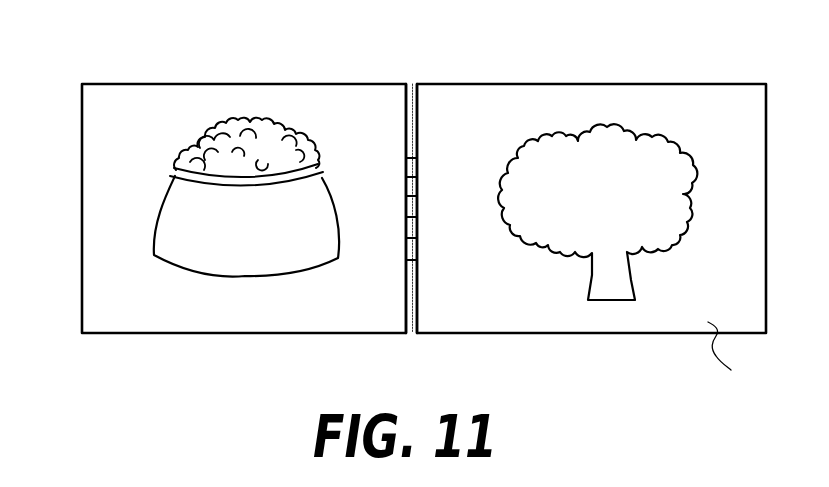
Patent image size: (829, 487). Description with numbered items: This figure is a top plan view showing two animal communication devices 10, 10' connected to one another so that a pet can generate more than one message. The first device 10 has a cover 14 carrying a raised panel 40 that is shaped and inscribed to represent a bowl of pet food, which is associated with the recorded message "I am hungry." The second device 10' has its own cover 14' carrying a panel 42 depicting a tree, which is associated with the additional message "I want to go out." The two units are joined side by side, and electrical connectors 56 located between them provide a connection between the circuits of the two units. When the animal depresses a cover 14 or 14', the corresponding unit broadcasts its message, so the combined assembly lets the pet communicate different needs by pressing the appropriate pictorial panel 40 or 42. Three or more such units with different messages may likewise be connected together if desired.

The animal communication device 10 is at (235, 185).
The animal communication device 10' is at (591, 179).
The cover 14 is at (179, 238).
The cover 14' is at (738, 353).
The panel 40 is at (284, 131).
The panel 42 is at (565, 138).
The electrical connectors 56 is at (418, 166).